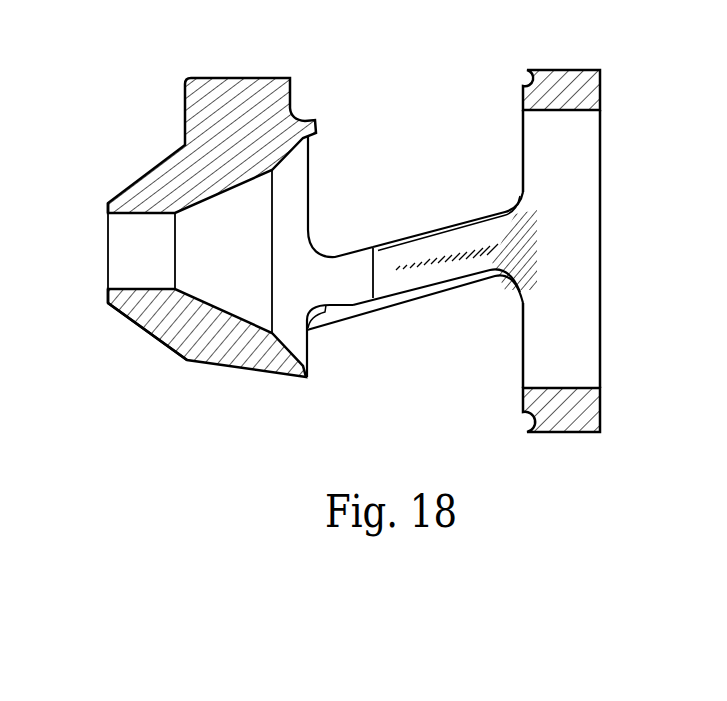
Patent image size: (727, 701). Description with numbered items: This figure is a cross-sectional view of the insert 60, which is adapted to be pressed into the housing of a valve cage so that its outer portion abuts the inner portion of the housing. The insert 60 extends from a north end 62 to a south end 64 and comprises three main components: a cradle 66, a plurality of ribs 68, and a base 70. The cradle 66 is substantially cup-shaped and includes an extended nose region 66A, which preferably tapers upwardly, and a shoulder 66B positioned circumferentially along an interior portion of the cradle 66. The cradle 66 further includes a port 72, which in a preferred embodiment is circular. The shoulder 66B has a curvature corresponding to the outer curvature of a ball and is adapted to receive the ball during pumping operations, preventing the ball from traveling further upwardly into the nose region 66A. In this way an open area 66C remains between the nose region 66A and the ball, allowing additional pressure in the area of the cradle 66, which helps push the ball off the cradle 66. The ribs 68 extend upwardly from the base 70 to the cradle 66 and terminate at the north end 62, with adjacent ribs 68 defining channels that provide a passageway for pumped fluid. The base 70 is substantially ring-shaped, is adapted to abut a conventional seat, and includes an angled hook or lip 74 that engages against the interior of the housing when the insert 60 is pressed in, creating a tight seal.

The insert 60 is at (376, 46).
The north end 62 is at (108, 300).
The south end 64 is at (602, 310).
The cradle 66 is at (233, 360).
The nose region 66A is at (124, 305).
The shoulder 66B is at (297, 343).
The open area 66C is at (253, 225).
The ribs 68 is at (433, 272).
The base 70 is at (578, 372).
The port 72 is at (118, 232).
The lip 74 is at (525, 72).